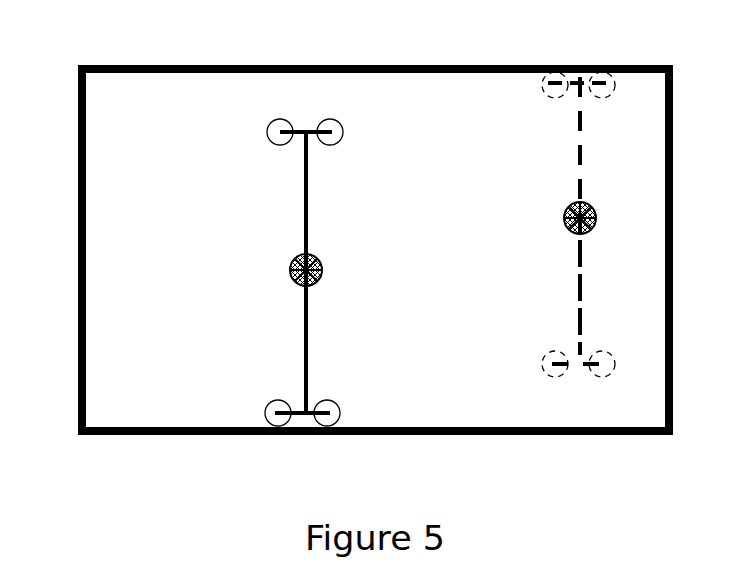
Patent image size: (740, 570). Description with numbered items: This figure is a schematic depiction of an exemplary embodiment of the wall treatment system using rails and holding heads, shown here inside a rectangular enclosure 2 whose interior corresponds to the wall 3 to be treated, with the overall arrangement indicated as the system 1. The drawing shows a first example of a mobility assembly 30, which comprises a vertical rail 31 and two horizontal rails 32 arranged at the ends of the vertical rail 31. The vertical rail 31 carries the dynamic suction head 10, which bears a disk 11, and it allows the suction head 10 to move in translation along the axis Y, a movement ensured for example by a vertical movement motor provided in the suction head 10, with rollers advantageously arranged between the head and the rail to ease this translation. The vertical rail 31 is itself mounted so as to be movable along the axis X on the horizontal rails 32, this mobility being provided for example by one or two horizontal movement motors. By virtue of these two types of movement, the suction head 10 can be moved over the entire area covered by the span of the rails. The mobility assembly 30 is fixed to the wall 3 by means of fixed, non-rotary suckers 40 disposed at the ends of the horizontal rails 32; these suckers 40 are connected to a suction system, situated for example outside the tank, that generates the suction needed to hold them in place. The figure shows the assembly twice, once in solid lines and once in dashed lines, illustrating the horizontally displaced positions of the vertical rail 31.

The cleaning device 1 is at (210, 145).
The enclosure / tank 2 is at (58, 90).
The wall 3 is at (427, 289).
The suction head 10 is at (285, 248).
The disk 11 is at (290, 271).
The mobility assembly 30 is at (322, 205).
The vertical rail 31 is at (305, 330).
The horizontal rail 32 is at (298, 415).
The fixed sucker 40 is at (328, 125).